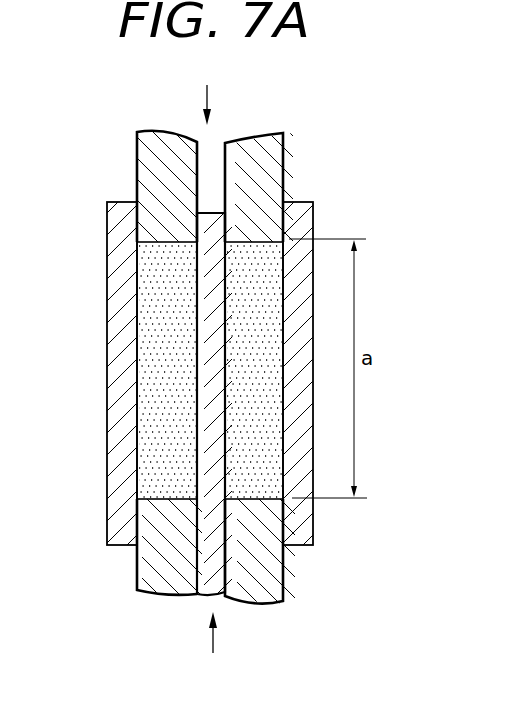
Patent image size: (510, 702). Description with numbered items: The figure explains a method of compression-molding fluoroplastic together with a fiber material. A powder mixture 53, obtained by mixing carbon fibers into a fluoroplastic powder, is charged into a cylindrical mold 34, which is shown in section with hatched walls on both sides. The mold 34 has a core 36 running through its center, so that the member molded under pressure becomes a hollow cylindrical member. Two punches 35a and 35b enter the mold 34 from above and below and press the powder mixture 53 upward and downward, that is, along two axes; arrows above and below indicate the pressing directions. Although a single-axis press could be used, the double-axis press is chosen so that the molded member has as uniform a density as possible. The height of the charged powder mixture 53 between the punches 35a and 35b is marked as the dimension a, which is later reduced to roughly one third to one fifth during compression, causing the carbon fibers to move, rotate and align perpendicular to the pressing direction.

The cylindrical mold 34 is at (300, 442).
The punch 35a is at (283, 148).
The punch 35b is at (265, 577).
The core 36 is at (205, 412).
The powder mixture 53 is at (265, 317).